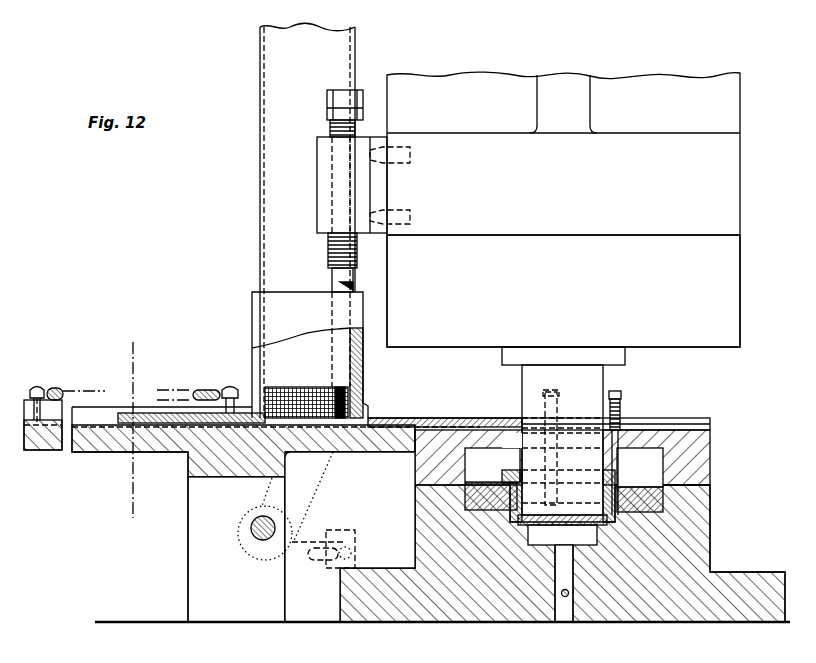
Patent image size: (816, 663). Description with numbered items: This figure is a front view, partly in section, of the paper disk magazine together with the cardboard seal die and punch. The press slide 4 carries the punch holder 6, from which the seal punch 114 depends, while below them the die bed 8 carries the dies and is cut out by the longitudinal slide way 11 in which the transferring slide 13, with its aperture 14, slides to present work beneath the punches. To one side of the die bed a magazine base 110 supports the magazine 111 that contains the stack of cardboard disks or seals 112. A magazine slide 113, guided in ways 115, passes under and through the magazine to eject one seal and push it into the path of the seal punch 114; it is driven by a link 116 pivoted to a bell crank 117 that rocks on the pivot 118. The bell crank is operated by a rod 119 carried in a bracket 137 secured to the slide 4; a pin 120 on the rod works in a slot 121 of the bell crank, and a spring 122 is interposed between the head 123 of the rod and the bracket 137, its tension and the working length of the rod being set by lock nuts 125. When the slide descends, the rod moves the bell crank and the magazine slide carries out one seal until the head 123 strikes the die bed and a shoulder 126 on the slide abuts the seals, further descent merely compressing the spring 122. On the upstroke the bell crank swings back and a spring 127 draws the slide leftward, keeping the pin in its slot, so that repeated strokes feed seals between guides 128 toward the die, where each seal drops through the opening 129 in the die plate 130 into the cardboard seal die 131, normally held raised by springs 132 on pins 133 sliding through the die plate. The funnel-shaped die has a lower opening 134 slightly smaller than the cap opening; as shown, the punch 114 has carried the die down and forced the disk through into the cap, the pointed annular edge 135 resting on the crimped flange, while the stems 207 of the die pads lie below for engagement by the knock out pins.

The slide 4 is at (563, 209).
The punch holder 6 is at (563, 291).
The die bed 8 is at (680, 548).
The slide way 11 is at (663, 498).
The transferring slide 13 is at (630, 500).
The aperture 14 is at (127, 363).
The magazine base 110 is at (228, 478).
The magazine 111 is at (290, 180).
The cardboard disks or seals 112 is at (290, 405).
The magazine slide 113 is at (170, 420).
The seal punch 114 is at (590, 377).
The ways 115 is at (143, 407).
The link 116 is at (270, 478).
The bell crank 117 is at (300, 542).
The pivot 118 is at (258, 536).
The rod 119 is at (355, 271).
The pin 120 is at (355, 543).
The slot 121 is at (322, 562).
The spring 122 is at (330, 258).
The head 123 is at (357, 554).
The lock nuts 125 is at (327, 98).
The shoulder 126 is at (258, 418).
The spring 127 is at (63, 388).
The guides 128 is at (473, 418).
The opening 129 is at (620, 432).
The die plate 130 is at (680, 452).
The cardboard seal die 131 is at (617, 490).
The springs 132 is at (620, 425).
The rods or pins 133 is at (612, 398).
The lower opening 134 is at (528, 515).
The pointed annular edge 135 is at (615, 512).
The bracket 137 is at (372, 187).
The stems 207 is at (567, 577).